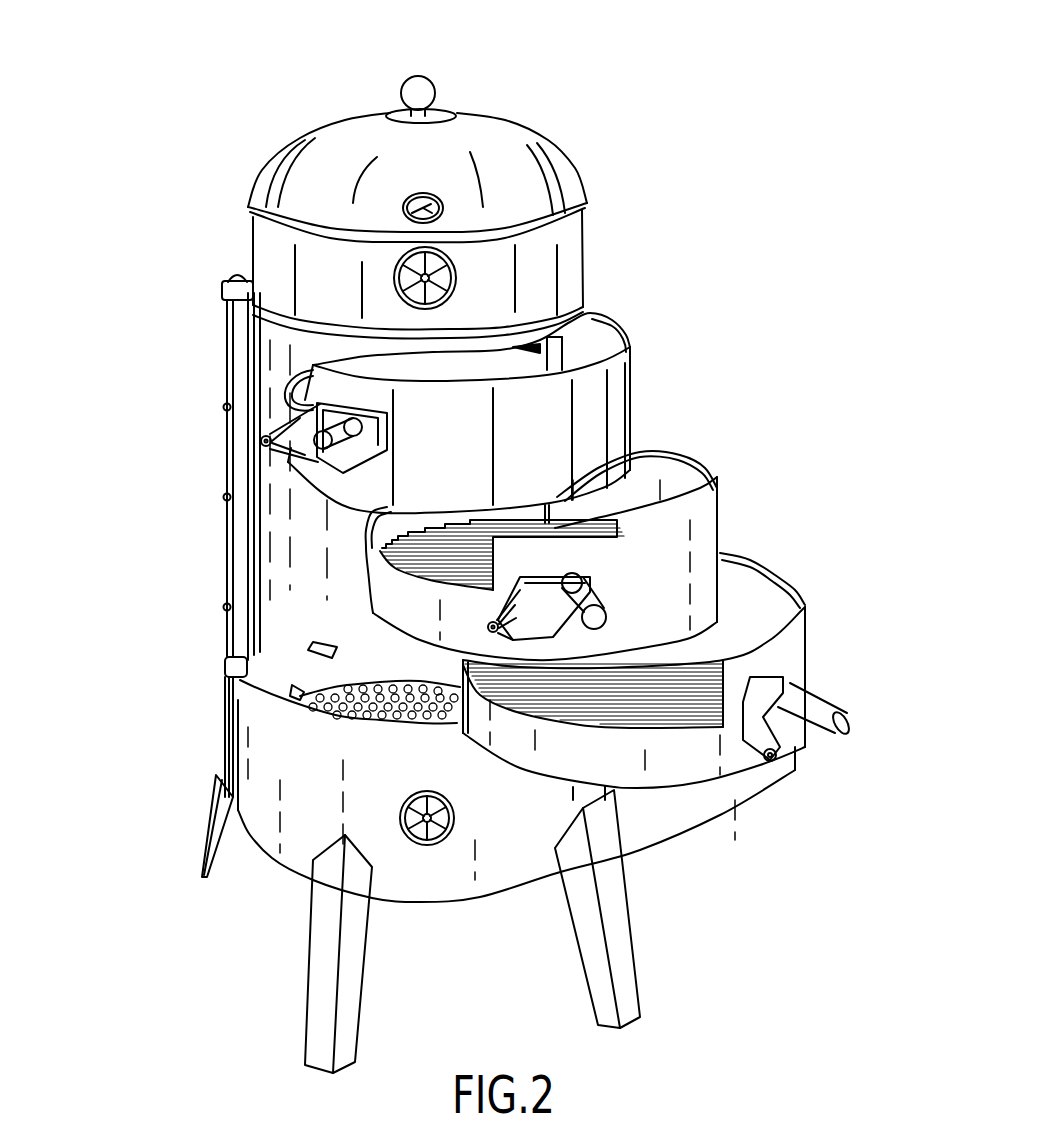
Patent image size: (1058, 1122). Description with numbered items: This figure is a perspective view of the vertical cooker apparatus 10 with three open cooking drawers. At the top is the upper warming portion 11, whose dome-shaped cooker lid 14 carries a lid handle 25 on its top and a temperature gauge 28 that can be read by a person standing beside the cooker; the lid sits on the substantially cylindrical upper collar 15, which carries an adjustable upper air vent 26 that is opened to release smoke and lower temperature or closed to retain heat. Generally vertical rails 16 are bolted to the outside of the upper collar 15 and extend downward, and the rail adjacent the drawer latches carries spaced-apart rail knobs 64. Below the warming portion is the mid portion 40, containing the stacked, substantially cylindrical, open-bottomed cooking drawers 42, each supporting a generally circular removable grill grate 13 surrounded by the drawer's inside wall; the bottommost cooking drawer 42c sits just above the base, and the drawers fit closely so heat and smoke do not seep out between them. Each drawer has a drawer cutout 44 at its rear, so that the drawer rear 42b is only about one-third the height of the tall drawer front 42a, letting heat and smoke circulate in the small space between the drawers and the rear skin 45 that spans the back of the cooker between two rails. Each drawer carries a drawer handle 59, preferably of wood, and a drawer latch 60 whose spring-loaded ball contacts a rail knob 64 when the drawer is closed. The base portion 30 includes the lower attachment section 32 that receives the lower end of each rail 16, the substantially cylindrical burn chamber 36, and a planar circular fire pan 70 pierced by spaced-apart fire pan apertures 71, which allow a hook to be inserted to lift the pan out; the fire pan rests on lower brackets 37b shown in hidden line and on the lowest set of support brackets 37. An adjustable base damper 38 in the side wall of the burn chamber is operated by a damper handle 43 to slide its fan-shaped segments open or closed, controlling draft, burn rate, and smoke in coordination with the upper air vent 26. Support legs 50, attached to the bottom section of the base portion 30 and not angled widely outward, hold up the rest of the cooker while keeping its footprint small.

The vertical cooker apparatus 10 is at (682, 65).
The upper warming portion 11 is at (638, 193).
The grill grate 13 is at (608, 518).
The cooker lid 14 is at (545, 160).
The upper collar 15 is at (560, 277).
The rails 16 is at (235, 323).
The lid handle 25 is at (417, 80).
The upper air vent 26 is at (455, 277).
The temperature gauge 28 is at (549, 171).
The base portion 30 is at (101, 762).
The lower attachment section 32 is at (222, 685).
The burn chamber 36 is at (292, 688).
The lower support brackets 37 is at (303, 648).
The lower brackets 37b is at (310, 700).
The base damper 38 is at (455, 817).
The mid portion 40 is at (786, 418).
The cooking drawers 42 is at (633, 382).
The drawer front 42a is at (715, 518).
The drawer rear 42b is at (373, 575).
The bottommost cooking drawer 42c is at (807, 643).
The damper handle 43 is at (393, 813).
The drawer cutout 44 is at (297, 377).
The rear skin 45 is at (282, 523).
The support legs 50 is at (197, 857).
The drawer handle 59 is at (343, 440).
The drawer latch 60 is at (262, 443).
The rail knobs 64 is at (226, 407).
The fire pan 70 is at (300, 690).
The fire pan apertures 71 is at (403, 716).